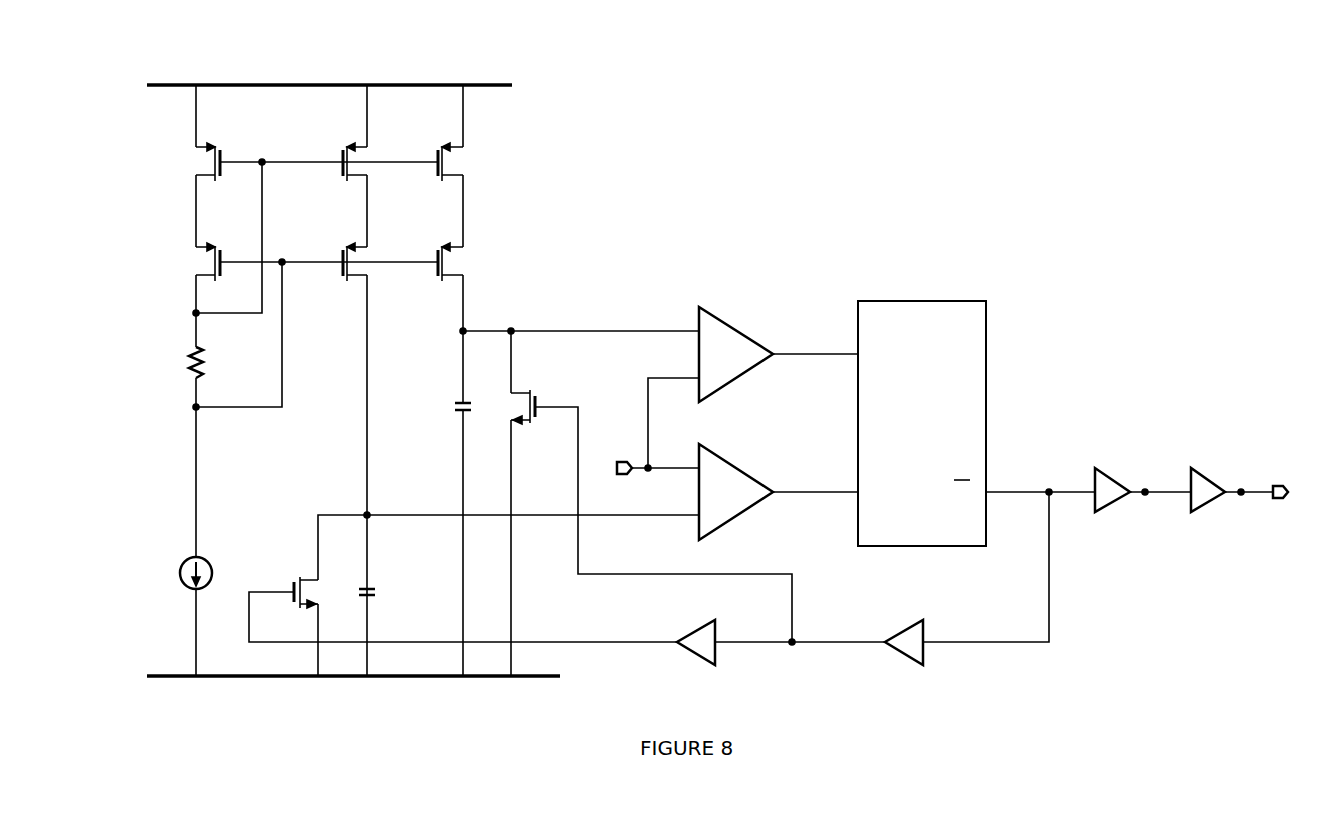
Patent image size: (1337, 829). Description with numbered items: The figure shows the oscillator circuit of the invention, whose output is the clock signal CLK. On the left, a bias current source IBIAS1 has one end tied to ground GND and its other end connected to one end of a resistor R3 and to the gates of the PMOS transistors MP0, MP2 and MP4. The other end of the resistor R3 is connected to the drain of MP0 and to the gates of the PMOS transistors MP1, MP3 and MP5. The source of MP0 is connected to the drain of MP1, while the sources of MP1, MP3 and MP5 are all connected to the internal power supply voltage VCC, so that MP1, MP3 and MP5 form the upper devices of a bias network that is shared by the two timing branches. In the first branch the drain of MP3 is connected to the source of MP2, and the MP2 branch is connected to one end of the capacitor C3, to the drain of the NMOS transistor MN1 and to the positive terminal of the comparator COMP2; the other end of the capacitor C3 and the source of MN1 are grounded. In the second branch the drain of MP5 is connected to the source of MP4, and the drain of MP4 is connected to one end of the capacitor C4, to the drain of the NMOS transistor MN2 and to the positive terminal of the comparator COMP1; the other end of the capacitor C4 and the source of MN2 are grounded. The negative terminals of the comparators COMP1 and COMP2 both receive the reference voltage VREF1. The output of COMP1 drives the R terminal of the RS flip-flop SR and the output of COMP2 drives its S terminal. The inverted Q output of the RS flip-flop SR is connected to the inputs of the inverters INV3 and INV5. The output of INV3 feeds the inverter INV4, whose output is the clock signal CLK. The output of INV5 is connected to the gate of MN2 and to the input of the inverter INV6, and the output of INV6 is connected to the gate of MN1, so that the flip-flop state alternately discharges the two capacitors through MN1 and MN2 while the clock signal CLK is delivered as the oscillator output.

The internal power supply voltage VCC is at (329, 74).
The ground GND is at (353, 691).
The PMOS transistor MP1 is at (192, 162).
The PMOS transistor MP0 is at (192, 262).
The PMOS transistor MP2 is at (373, 265).
The PMOS transistor MP3 is at (373, 165).
The PMOS transistor MP4 is at (468, 262).
The PMOS transistor MP5 is at (468, 162).
The NMOS transistor MN1 is at (287, 588).
The NMOS transistor MN2 is at (540, 402).
The resistor R3 is at (181, 362).
The bias current source IBIAS1 is at (174, 573).
The capacitor C3 is at (355, 596).
The capacitor C4 is at (451, 409).
The reference voltage VREF1 is at (626, 457).
The comparator COMP1 is at (736, 354).
The comparator COMP2 is at (736, 492).
The RS flip-flop SR is at (922, 423).
The inverter INV3 is at (1114, 504).
The inverter INV4 is at (1210, 504).
The inverter INV5 is at (904, 655).
The inverter INV6 is at (697, 655).
The clock signal CLK is at (1282, 478).